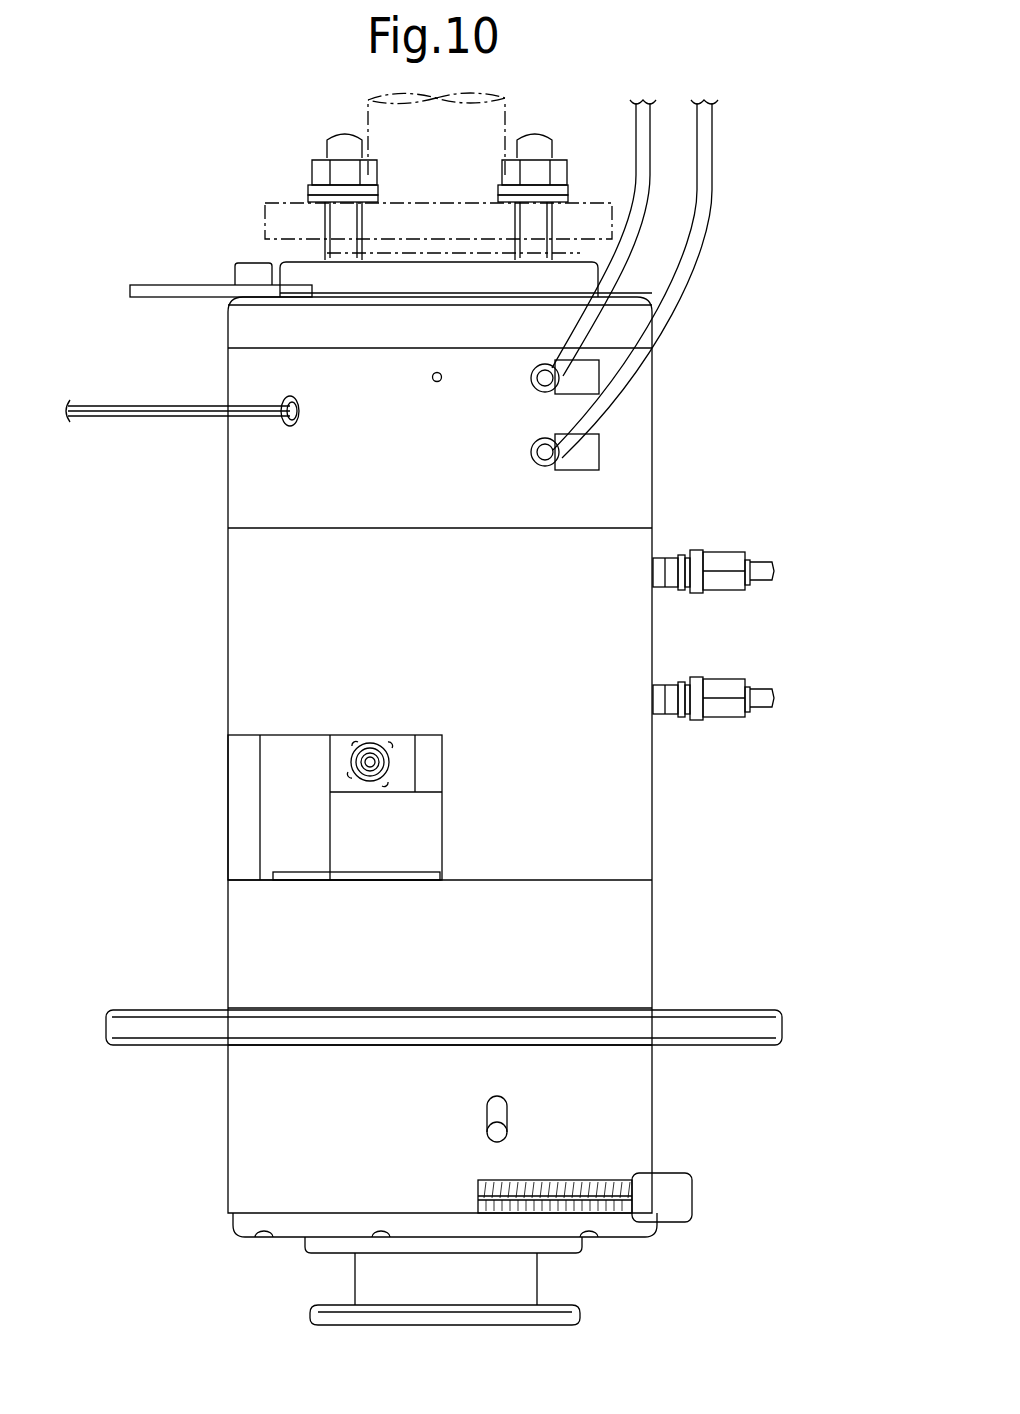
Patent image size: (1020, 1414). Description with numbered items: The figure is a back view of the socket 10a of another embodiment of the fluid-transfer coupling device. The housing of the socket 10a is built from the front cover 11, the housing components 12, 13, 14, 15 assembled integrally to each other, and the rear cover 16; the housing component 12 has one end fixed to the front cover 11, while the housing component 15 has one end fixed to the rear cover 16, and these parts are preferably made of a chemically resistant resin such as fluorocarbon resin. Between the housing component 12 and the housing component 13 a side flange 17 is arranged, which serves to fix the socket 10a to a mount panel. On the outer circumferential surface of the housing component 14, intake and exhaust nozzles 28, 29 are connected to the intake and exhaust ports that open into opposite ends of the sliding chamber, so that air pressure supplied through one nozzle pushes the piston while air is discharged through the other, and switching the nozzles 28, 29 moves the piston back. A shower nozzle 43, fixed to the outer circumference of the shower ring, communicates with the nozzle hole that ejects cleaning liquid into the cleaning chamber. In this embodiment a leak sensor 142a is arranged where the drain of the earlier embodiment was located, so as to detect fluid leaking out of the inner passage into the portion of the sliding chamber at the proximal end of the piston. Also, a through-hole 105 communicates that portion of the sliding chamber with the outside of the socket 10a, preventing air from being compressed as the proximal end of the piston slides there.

The socket 10a is at (725, 313).
The front cover 11 is at (633, 1222).
The housing component 12 is at (637, 1120).
The housing component 13 is at (630, 927).
The housing component 14 is at (630, 823).
The housing component 15 is at (635, 441).
The rear cover 16 is at (614, 320).
The side flange 17 is at (750, 1025).
The intake and exhaust nozzle 28 is at (718, 556).
The intake and exhaust nozzle 29 is at (720, 684).
The shower nozzle 43 is at (345, 755).
The through-hole 105 is at (434, 373).
The leak sensor 142a is at (134, 404).